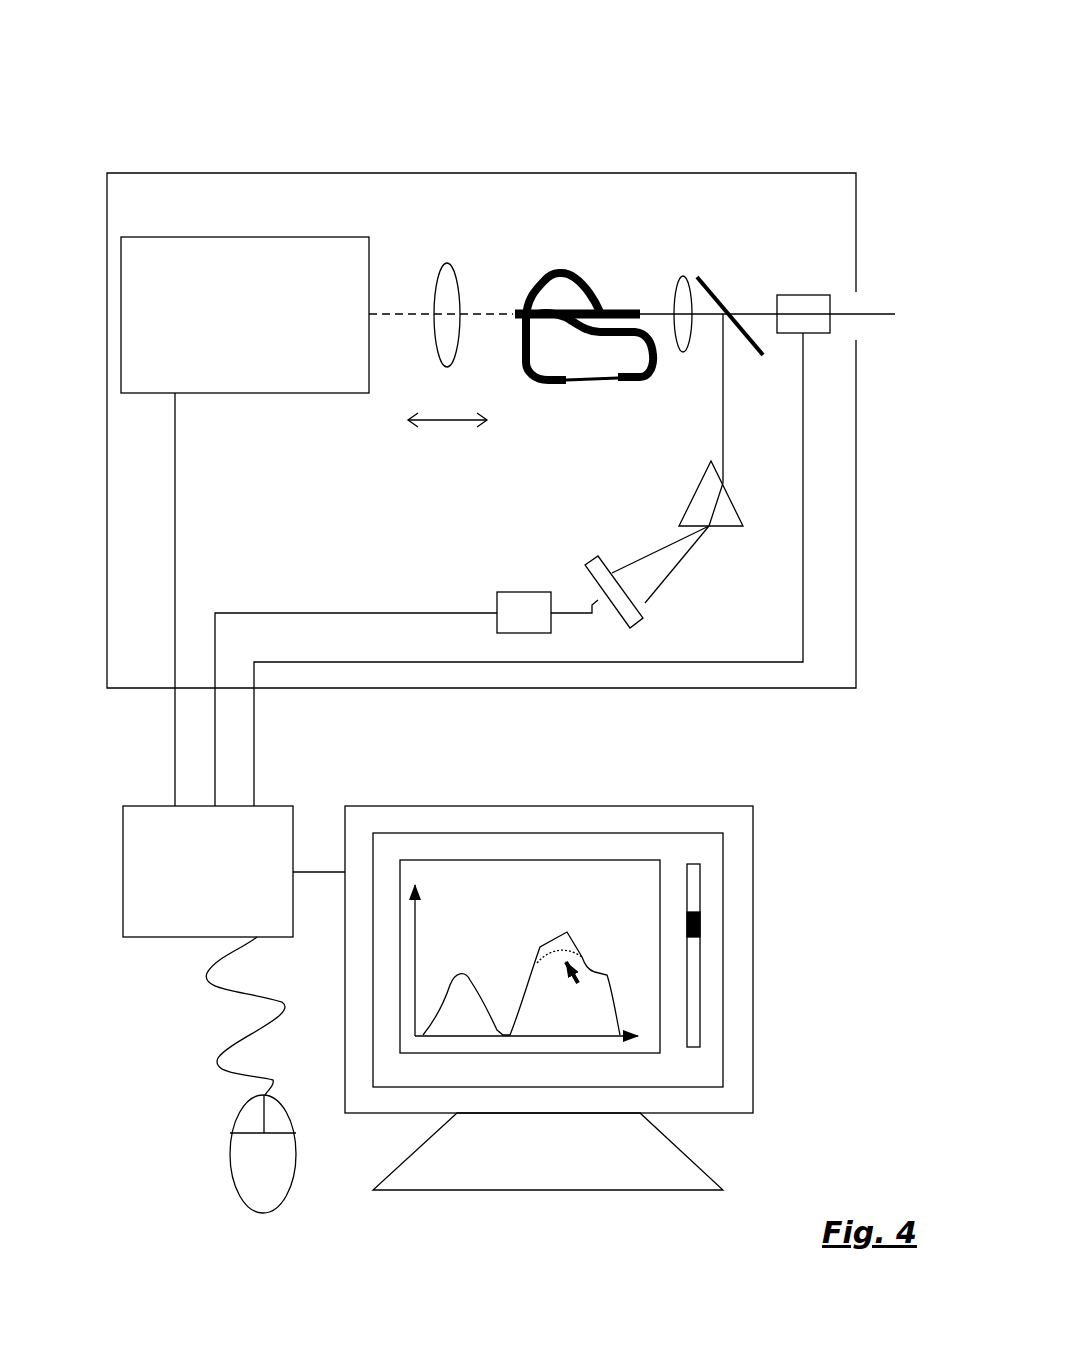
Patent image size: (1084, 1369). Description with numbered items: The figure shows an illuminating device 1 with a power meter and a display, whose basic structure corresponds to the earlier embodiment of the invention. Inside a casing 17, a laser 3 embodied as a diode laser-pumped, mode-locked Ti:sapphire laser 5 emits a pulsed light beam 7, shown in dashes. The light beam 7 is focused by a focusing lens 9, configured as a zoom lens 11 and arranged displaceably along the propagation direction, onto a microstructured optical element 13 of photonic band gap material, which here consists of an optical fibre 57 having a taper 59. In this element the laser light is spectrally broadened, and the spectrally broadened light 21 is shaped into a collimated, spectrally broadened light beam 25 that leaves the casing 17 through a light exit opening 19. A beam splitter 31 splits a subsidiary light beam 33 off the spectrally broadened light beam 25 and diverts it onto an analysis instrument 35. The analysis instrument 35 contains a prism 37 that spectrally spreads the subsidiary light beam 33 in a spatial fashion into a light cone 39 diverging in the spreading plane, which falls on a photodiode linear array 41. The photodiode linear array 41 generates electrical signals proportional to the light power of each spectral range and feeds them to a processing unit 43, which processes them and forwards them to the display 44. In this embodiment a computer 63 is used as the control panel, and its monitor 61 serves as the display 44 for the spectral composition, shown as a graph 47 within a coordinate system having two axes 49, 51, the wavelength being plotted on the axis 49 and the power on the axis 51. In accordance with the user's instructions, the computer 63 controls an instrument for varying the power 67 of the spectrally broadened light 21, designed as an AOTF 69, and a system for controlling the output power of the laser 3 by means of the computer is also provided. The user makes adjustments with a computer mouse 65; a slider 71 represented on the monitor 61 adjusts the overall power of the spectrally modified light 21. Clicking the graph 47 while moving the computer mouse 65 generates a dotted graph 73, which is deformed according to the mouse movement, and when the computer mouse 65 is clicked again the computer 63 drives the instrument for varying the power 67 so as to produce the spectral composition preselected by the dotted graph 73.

The illuminating device 1 is at (333, 107).
The laser 3 is at (245, 285).
The Ti:sapphire laser 5 is at (252, 250).
The light beam 7 is at (382, 312).
The focusing lens 9 is at (485, 310).
The zoom lens 11 is at (447, 342).
The microstructured optical element 13 is at (573, 354).
The casing 17 is at (858, 660).
The light exit opening 19 is at (857, 303).
The spectrally broadened light 21 is at (668, 303).
The spectrally broadened light beam 25 is at (908, 315).
The beam splitter 31 is at (715, 287).
The subsidiary light beam 33 is at (723, 410).
The analysis instrument 35 is at (615, 547).
The prism 37 is at (705, 490).
The light cone 39 is at (645, 577).
The photodiode linear array 41 is at (630, 618).
The processing unit 43 is at (537, 605).
The display 44 is at (584, 965).
The graph 47 is at (540, 947).
The axis 49 is at (595, 1020).
The axis 51 is at (415, 932).
The optical fibre 57 is at (598, 303).
The taper 59 is at (583, 385).
The monitor 61 is at (645, 818).
The computer 63 is at (137, 883).
The computer mouse 65 is at (268, 1185).
The instrument for varying the power 67 is at (814, 299).
The AOTF 69 is at (812, 325).
The slider 71 is at (700, 897).
The dotted graph 73 is at (545, 968).